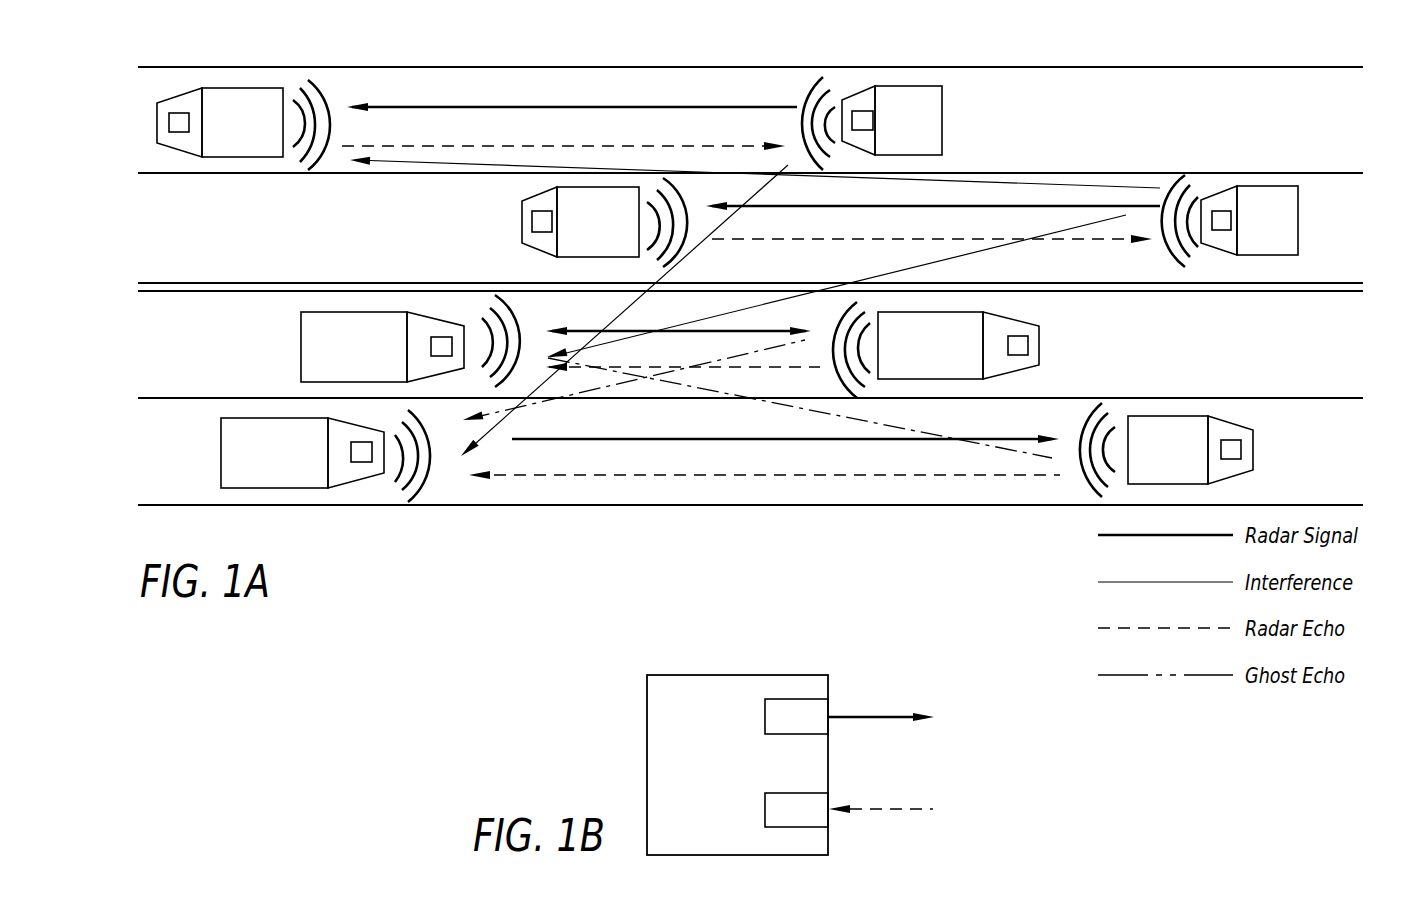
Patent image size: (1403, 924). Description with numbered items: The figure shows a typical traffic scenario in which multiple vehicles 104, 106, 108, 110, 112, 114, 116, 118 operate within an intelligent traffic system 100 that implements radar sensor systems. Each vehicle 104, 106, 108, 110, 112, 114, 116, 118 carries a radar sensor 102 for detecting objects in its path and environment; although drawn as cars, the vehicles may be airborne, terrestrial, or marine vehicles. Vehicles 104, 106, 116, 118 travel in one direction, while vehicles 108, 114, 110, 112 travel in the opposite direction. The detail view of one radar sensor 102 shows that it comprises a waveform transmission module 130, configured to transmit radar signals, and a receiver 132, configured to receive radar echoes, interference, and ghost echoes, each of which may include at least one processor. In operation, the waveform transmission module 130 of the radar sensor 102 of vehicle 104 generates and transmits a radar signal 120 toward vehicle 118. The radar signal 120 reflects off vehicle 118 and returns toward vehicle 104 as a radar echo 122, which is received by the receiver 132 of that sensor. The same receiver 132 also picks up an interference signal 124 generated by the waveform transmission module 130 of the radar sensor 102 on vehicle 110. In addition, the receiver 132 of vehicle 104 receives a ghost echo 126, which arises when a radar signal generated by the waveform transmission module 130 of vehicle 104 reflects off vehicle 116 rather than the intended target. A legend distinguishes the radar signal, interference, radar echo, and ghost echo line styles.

In FIG. 1A, the intelligent traffic system 100 is at (346, 48).
In FIG. 1A, the radar sensor 102 is at (178, 121).
In FIG. 1B, the radar sensor 102 is at (699, 767).
In FIG. 1A, the vehicle 104 is at (292, 465).
In FIG. 1A, the vehicle 106 is at (372, 360).
In FIG. 1A, the vehicle 108 is at (262, 136).
In FIG. 1A, the vehicle 110 is at (929, 134).
In FIG. 1A, the vehicle 112 is at (1287, 234).
In FIG. 1A, the vehicle 114 is at (615, 234).
In FIG. 1A, the vehicle 116 is at (948, 358).
In FIG. 1A, the vehicle 118 is at (1186, 462).
In FIG. 1A, the radar signal 120 is at (533, 441).
In FIG. 1A, the radar echo 122 is at (697, 478).
In FIG. 1A, the interference signal 124 is at (692, 253).
In FIG. 1A, the ghost echo 126 is at (758, 352).
In FIG. 1B, the waveform transmission module 130 is at (828, 710).
In FIG. 1B, the receiver 132 is at (821, 820).